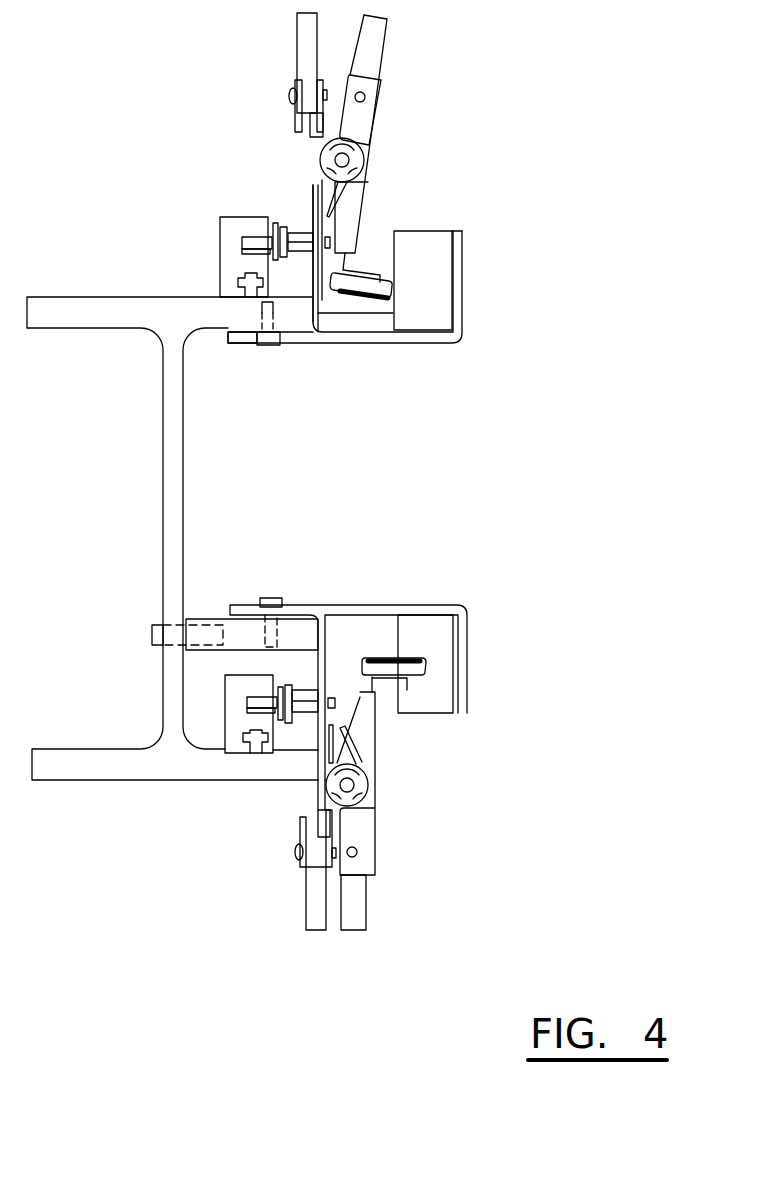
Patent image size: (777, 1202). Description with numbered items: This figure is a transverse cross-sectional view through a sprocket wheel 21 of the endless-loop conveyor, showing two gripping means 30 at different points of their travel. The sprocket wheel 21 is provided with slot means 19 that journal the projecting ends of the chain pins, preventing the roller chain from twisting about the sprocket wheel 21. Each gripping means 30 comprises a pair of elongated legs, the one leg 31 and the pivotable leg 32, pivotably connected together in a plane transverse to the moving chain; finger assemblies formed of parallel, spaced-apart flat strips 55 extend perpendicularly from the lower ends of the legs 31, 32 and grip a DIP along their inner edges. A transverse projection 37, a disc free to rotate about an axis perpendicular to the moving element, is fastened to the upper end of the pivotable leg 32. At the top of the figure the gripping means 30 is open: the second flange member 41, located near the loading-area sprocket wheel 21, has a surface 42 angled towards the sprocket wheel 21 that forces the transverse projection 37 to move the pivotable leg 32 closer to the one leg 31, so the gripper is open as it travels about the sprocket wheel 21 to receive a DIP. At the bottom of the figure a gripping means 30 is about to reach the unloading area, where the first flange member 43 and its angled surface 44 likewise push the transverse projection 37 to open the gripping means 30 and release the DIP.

The slot means 19 is at (246, 230).
The sprocket wheel 21 is at (300, 233).
The gripping means 30 is at (408, 91).
The leg 31 is at (315, 790).
The pivotable leg 32 is at (372, 786).
The transverse projection 37 is at (372, 290).
The second flange member 41 is at (466, 278).
The surface 42 is at (422, 240).
The first flange member 43 is at (460, 600).
The surface 44 is at (443, 705).
The strips 55 is at (312, 922).